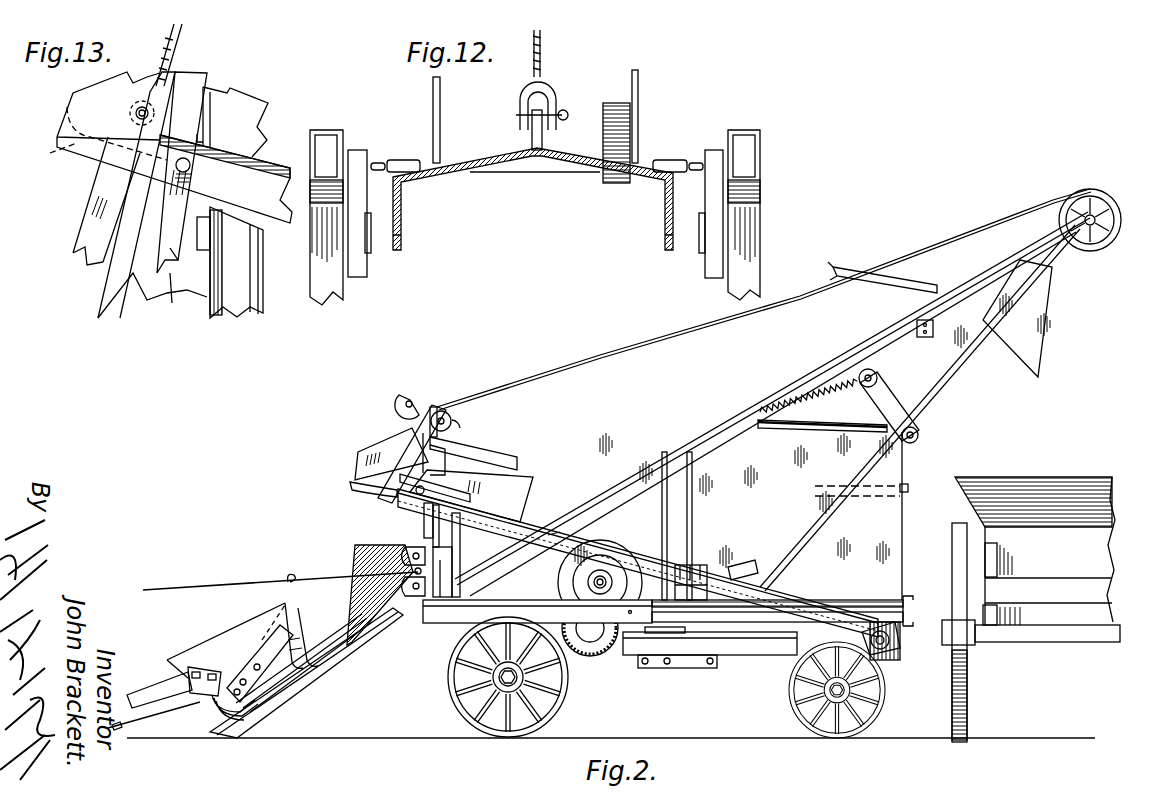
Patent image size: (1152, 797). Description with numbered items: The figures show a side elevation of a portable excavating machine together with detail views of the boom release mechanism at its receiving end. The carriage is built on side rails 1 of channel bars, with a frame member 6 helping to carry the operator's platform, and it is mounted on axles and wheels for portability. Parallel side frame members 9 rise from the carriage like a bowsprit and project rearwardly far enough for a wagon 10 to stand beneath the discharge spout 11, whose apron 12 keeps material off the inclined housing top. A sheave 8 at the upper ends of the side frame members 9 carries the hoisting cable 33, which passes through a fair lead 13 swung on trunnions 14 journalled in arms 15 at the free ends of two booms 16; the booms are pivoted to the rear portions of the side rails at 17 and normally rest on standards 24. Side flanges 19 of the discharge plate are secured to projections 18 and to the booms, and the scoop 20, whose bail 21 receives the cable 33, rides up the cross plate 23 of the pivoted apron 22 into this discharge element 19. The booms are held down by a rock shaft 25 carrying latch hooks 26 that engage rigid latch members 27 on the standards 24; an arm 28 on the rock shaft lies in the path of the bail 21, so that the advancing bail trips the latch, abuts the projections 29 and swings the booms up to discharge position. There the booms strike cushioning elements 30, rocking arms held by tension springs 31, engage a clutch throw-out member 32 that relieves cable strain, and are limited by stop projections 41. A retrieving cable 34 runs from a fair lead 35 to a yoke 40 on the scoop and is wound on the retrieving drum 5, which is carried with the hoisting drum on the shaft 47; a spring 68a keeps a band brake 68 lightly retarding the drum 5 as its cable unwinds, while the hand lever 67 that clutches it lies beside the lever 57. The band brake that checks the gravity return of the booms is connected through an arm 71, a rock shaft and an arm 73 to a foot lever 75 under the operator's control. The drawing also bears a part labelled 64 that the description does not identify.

In FIG. 2, the side rail 1 is at (868, 601).
In FIG. 2, the retrieving drum 5 is at (612, 545).
In FIG. 2, the frame member 6 is at (447, 622).
In FIG. 2, the sheave 8 is at (1095, 191).
In FIG. 2, the side frame member 9 is at (995, 280).
In FIG. 2, the wagon 10 is at (1085, 550).
In FIG. 2, the discharge spout 11 is at (1035, 318).
In FIG. 2, the apron 12 is at (890, 275).
In FIG. 2, the fair lead 13 is at (408, 398).
In FIG. 2, the trunnions 14 is at (442, 411).
In FIG. 13, the perpendicular arms 15 is at (200, 73).
In FIG. 2, the perpendicular arms 15 is at (420, 440).
In FIG. 13, the boom 16 is at (257, 183).
In FIG. 12, the boom 16 is at (330, 133).
In FIG. 2, the boom 16 is at (530, 524).
In FIG. 2, the boom pivot 17 is at (887, 652).
In FIG. 2, the projections 18 is at (480, 450).
In FIG. 13, the discharge element 19 is at (133, 273).
In FIG. 2, the discharge element 19 is at (520, 476).
In FIG. 2, the scoop 20 is at (237, 642).
In FIG. 13, the bail 21 is at (100, 197).
In FIG. 12, the bail 21 is at (563, 165).
In FIG. 2, the bail 21 is at (300, 615).
In FIG. 2, the apron 22 is at (310, 672).
In FIG. 2, the cross plate 23 is at (318, 652).
In FIG. 13, the standard 24 is at (247, 290).
In FIG. 12, the standard 24 is at (750, 228).
In FIG. 2, the standard 24 is at (452, 556).
In FIG. 13, the rock shaft 25 is at (190, 161).
In FIG. 12, the rock shaft 25 is at (402, 160).
In FIG. 2, the rock shaft 25 is at (424, 491).
In FIG. 13, the latch hook 26 is at (172, 305).
In FIG. 12, the latch hook 26 is at (355, 262).
In FIG. 2, the latch hook 26 is at (420, 540).
In FIG. 13, the rigid latch member 27 is at (205, 235).
In FIG. 12, the rigid latch member 27 is at (370, 240).
In FIG. 2, the rigid latch member 27 is at (418, 520).
In FIG. 13, the arm 28 is at (93, 140).
In FIG. 12, the arm 28 is at (612, 115).
In FIG. 2, the arm 28 is at (378, 492).
In FIG. 13, the projections 29 is at (93, 104).
In FIG. 12, the projections 29 is at (432, 103).
In FIG. 2, the projections 29 is at (377, 462).
In FIG. 2, the cushioning element 30 is at (897, 390).
In FIG. 2, the tension spring 31 is at (812, 400).
In FIG. 2, the clutch throw-out member 32 is at (906, 484).
In FIG. 2, the cable 33 is at (668, 340).
In FIG. 2, the retrieving cable 34 is at (290, 577).
In FIG. 2, the fair lead 35 is at (406, 556).
In FIG. 2, the yoke 40 is at (187, 705).
In FIG. 2, the stop projection 41 is at (916, 326).
In FIG. 2, the shaft 47 is at (603, 578).
In FIG. 2, the hand lever 57 is at (692, 465).
In FIG. 2, the gear 64 is at (598, 655).
In FIG. 2, the hand lever 67 is at (663, 485).
In FIG. 2, the band brake 68 is at (566, 577).
In FIG. 2, the spring 68a is at (575, 645).
In FIG. 2, the arm 71 is at (652, 670).
In FIG. 2, the arm 73 is at (672, 667).
In FIG. 2, the foot lever 75 is at (718, 568).